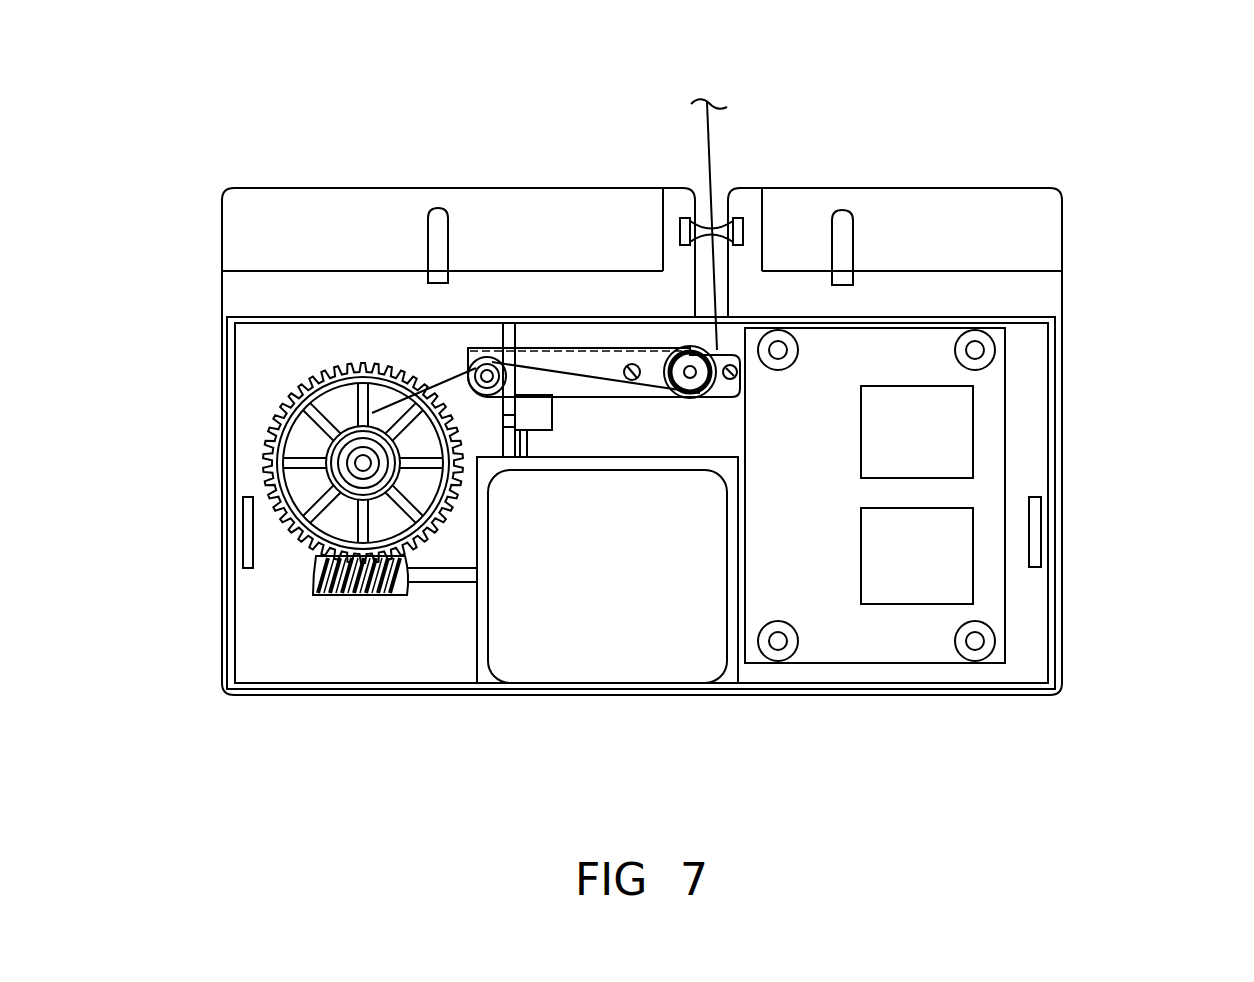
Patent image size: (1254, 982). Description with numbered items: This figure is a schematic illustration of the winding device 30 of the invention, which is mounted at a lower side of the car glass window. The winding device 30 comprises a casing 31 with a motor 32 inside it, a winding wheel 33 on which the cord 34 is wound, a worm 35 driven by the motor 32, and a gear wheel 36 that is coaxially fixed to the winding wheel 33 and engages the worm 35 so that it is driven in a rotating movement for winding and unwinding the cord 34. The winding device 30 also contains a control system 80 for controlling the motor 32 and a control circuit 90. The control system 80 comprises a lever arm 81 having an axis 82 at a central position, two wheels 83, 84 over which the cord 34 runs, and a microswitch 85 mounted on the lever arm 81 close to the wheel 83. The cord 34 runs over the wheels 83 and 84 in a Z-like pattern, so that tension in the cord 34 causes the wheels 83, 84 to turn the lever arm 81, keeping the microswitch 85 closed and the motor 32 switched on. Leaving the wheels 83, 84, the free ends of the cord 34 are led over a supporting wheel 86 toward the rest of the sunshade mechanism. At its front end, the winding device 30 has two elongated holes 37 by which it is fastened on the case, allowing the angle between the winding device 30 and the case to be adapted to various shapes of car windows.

The winding device 30 is at (1102, 402).
The casing 31 is at (237, 293).
The motor 32 is at (645, 638).
The winding wheel 33 is at (337, 447).
The cord 34 is at (710, 152).
The worm 35 is at (347, 595).
The gear wheel 36 is at (273, 489).
The elongated holes 37 is at (843, 220).
The control system 80 is at (573, 348).
The lever arm 81 is at (535, 360).
The axis 82 is at (632, 372).
The wheel 83 is at (480, 373).
The wheel 84 is at (690, 372).
The microswitch 85 is at (527, 418).
The supporting wheel 86 is at (717, 227).
The control circuit 90 is at (848, 633).